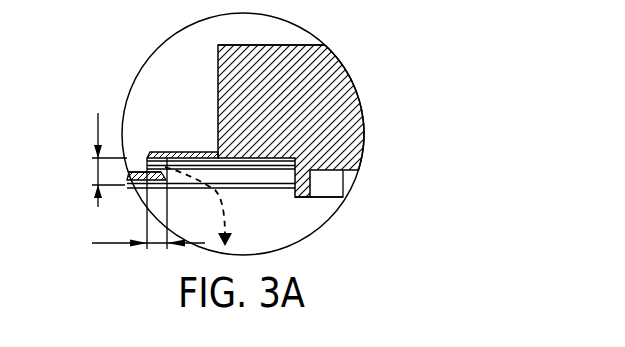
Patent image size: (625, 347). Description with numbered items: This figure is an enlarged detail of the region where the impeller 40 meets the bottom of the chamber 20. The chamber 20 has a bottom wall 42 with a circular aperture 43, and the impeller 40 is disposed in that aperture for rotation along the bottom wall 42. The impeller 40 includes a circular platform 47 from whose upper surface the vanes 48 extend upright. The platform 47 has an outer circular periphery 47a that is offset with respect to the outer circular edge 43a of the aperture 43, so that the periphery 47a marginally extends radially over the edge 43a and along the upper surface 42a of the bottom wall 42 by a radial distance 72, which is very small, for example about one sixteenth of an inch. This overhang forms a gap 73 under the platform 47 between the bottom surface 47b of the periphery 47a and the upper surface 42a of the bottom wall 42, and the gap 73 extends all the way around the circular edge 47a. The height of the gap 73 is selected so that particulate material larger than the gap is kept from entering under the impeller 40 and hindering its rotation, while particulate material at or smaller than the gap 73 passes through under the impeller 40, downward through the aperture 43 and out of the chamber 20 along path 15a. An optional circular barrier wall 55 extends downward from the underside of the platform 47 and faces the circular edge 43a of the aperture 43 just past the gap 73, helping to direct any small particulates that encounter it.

The chamber 20 is at (173, 57).
The impeller 40 is at (330, 110).
The vanes 48 is at (282, 45).
The circular barrier wall 55 is at (302, 198).
The platform 47 is at (215, 119).
The outer circular periphery 47a is at (149, 153).
The bottom surface 47b is at (155, 156).
The bottom wall 42 is at (132, 183).
The upper surface 42a is at (158, 172).
The circular aperture 43 is at (284, 197).
The outer circular edge 43a is at (170, 184).
The path 15a is at (224, 204).
The gap 73 is at (114, 171).
The radial distance 72 is at (156, 248).